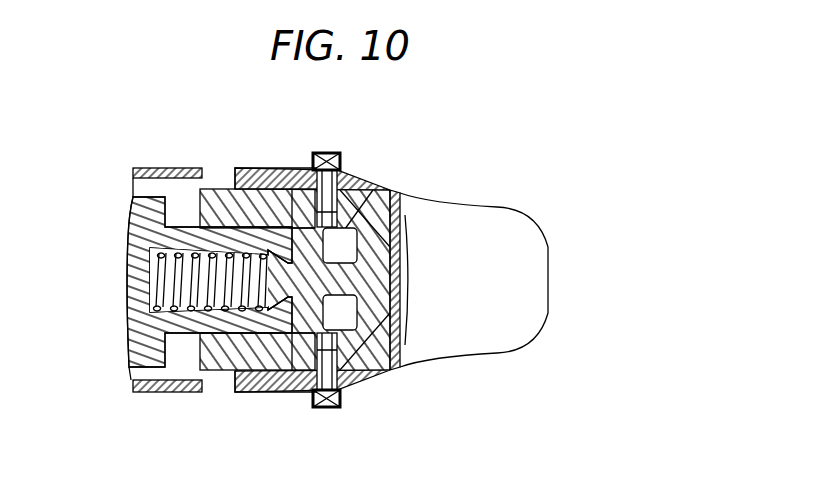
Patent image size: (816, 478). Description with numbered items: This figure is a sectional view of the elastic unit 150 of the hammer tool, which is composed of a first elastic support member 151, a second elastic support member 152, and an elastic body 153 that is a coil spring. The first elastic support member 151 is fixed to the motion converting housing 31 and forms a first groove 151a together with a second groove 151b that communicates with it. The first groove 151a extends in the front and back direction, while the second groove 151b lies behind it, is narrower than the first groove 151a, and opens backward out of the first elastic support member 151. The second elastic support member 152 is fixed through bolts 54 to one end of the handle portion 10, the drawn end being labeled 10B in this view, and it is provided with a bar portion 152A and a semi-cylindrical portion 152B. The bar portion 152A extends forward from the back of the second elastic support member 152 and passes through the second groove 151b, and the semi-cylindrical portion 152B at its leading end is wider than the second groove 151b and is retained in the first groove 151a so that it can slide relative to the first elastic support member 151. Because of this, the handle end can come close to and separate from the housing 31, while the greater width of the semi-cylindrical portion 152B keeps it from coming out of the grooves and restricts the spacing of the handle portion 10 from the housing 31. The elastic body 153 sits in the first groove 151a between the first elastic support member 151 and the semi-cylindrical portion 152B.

The handle portion 10 is at (507, 327).
The cover wall 10B is at (383, 377).
The motion converting housing 31 is at (165, 170).
The bolts 54 is at (342, 165).
The elastic unit 150 is at (150, 376).
The first elastic support member 151 is at (157, 337).
The first groove 151a is at (160, 268).
The second groove 151b is at (345, 291).
The second elastic support member 152 is at (238, 168).
The bar portion 152A is at (372, 205).
The semi-cylindrical portion 152B is at (289, 200).
The elastic body 153 is at (256, 300).